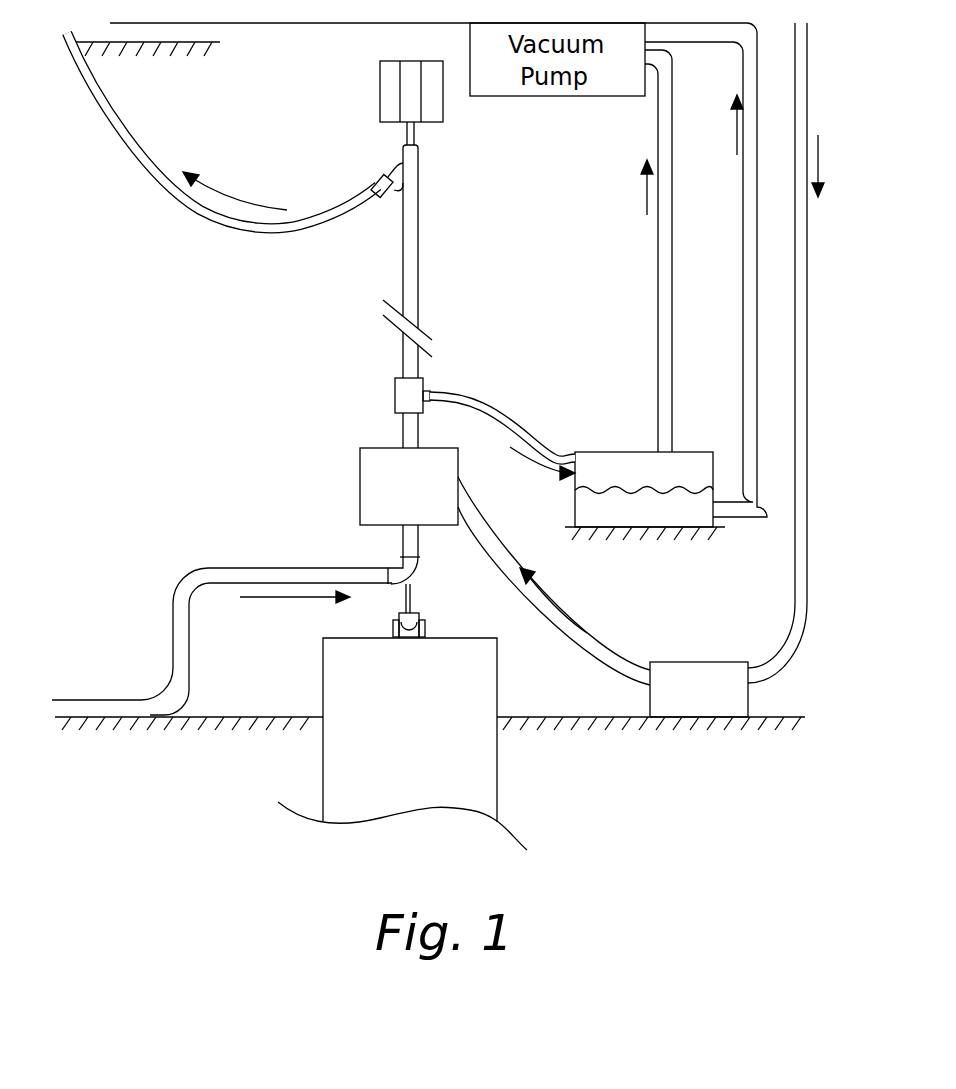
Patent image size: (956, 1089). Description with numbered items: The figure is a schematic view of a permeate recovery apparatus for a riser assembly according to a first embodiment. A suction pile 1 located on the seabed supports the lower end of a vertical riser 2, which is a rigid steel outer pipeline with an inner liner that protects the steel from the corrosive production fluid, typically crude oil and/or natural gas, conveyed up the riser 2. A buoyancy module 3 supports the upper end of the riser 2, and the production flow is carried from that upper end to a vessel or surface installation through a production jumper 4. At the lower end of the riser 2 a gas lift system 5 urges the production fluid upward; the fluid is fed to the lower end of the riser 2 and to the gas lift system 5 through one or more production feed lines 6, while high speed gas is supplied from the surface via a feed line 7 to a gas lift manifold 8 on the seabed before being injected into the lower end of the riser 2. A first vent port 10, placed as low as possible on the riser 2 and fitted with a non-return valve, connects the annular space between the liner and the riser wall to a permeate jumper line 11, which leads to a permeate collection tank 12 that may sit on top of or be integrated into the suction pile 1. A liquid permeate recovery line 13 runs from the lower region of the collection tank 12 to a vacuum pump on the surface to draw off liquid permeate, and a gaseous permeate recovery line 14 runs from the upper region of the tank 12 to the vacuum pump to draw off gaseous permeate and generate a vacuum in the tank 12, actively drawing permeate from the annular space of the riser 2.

The suction pile 1 is at (420, 740).
The riser 2 is at (410, 248).
The buoyancy module 3 is at (433, 100).
The production jumper 4 is at (170, 173).
The gas lift system 5 is at (360, 487).
The production feed line 6 is at (193, 590).
The feed line 7 is at (808, 339).
The gas lift manifold 8 is at (712, 708).
The first vent port 10 is at (412, 389).
The permeate jumper line 11 is at (510, 428).
The permeate collection tank 12 is at (601, 452).
The liquid permeate recovery line 13 is at (743, 320).
The gaseous permeate recovery line 14 is at (657, 265).